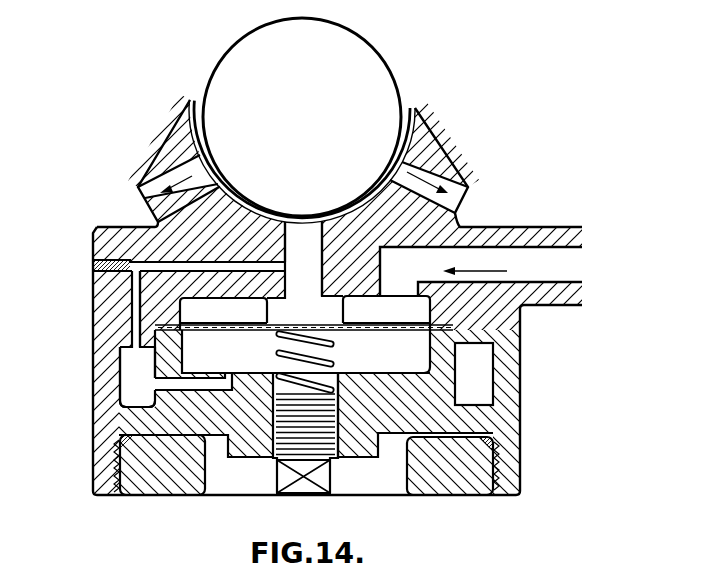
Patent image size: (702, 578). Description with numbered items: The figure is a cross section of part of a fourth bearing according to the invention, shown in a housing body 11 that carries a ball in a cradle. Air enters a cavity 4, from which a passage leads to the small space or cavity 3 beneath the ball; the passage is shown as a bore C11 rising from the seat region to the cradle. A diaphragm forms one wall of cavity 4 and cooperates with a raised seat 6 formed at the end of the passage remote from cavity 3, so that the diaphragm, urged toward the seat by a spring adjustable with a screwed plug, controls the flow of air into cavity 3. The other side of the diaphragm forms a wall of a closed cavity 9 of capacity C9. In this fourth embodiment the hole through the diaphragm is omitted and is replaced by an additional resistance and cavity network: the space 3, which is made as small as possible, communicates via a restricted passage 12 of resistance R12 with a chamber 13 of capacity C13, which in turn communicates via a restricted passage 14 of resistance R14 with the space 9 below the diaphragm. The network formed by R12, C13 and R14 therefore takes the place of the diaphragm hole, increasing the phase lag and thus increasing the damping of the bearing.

The housing body with ball cradle 11 is at (232, 261).
The cavity 3 is at (302, 214).
The bore channel C11 is at (284, 264).
The restricted passage 12 is at (92, 277).
The resistance of restricted passage 12 R12 is at (90, 309).
The capacity of chamber 13 C13 is at (137, 377).
The chamber 13 is at (137, 377).
The restricted passage 14 is at (195, 386).
The resistance of restricted passage 14 R14 is at (156, 415).
The raised seat 6 is at (270, 308).
The cavity 4 is at (386, 313).
The capacity of space 9 C9 is at (306, 351).
The closed cavity 9 is at (304, 357).